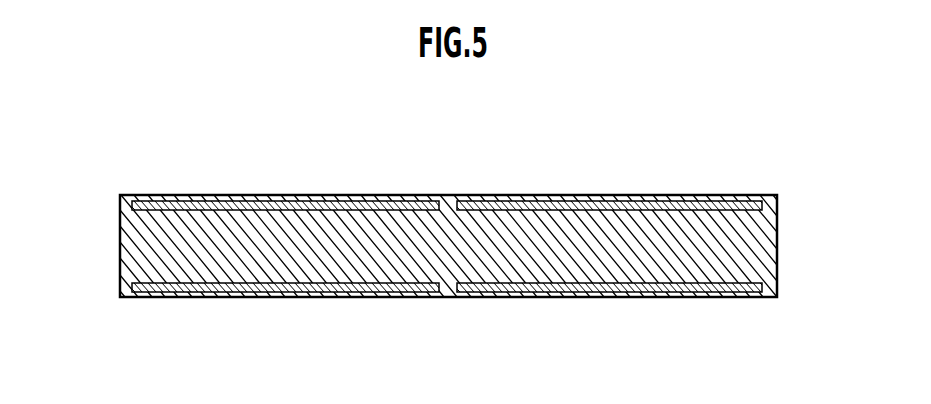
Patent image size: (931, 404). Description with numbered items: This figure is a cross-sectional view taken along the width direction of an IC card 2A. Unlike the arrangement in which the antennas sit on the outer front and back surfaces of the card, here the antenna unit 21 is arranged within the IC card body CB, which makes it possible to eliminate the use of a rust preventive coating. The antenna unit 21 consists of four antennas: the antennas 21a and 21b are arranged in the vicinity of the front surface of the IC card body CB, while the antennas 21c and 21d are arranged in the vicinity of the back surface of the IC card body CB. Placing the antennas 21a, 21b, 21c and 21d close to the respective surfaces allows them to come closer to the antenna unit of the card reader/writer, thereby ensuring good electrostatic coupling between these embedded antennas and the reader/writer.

The IC card 2A is at (472, 127).
The IC card body CB is at (138, 243).
The antenna unit 21 is at (503, 249).
The antenna 21a is at (243, 203).
The antenna 21b is at (653, 200).
The antenna 21c is at (235, 292).
The antenna 21d is at (652, 293).